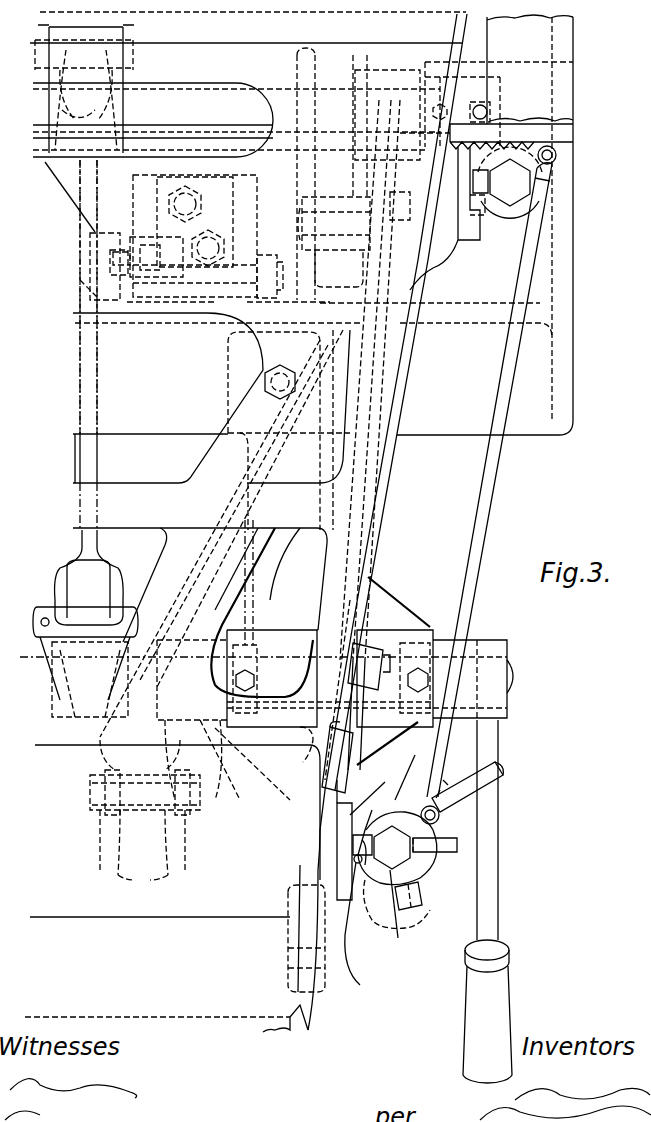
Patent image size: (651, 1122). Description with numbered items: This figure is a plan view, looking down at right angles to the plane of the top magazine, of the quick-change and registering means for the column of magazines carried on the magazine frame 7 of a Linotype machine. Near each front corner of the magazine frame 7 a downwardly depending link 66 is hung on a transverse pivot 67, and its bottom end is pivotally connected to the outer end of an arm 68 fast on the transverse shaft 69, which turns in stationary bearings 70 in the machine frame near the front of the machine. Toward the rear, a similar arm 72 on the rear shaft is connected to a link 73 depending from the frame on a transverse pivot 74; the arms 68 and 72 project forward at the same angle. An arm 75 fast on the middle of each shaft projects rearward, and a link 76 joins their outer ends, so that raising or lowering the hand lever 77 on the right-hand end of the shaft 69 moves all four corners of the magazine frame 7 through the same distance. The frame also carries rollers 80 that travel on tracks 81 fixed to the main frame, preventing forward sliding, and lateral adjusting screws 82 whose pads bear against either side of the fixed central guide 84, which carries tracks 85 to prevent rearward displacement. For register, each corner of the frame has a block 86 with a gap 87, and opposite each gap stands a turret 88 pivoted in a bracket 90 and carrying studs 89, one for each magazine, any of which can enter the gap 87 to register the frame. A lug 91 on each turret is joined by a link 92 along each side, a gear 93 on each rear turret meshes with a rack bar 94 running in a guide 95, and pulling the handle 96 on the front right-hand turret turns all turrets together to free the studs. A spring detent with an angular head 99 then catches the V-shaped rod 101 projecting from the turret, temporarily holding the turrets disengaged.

The magazine frame 7 is at (383, 512).
The link 66 is at (148, 830).
The transverse pivot 67 is at (90, 798).
The arm 68 is at (210, 735).
The transverse shaft 69 is at (512, 680).
The stationary bearings 70 is at (263, 637).
The arm 72 is at (293, 163).
The link 73 is at (334, 171).
The transverse pivot 74 is at (425, 263).
The arm 75 is at (80, 23).
The link 76 is at (97, 408).
The hand lever 77 is at (498, 935).
The rollers 80 is at (266, 255).
The tracks 81 is at (207, 313).
The lateral adjusting screws 82 is at (138, 240).
The central guide 84 is at (82, 305).
The tracks 85 is at (90, 233).
The block 86 is at (462, 226).
The gap 87 is at (535, 208).
The turret 88 is at (520, 190).
The studs 89 is at (360, 940).
The bracket 90 is at (410, 905).
The lug 91 is at (440, 818).
The link 92 is at (490, 484).
The gear 93 is at (556, 157).
The rack bar 94 is at (545, 140).
The guide 95 is at (560, 122).
The handle 96 is at (500, 770).
The head 99 is at (424, 898).
The rod 101 is at (460, 850).